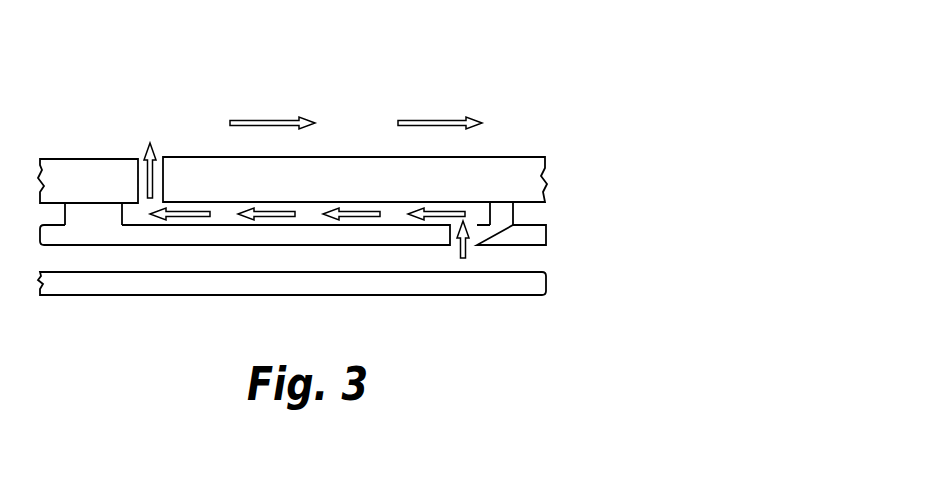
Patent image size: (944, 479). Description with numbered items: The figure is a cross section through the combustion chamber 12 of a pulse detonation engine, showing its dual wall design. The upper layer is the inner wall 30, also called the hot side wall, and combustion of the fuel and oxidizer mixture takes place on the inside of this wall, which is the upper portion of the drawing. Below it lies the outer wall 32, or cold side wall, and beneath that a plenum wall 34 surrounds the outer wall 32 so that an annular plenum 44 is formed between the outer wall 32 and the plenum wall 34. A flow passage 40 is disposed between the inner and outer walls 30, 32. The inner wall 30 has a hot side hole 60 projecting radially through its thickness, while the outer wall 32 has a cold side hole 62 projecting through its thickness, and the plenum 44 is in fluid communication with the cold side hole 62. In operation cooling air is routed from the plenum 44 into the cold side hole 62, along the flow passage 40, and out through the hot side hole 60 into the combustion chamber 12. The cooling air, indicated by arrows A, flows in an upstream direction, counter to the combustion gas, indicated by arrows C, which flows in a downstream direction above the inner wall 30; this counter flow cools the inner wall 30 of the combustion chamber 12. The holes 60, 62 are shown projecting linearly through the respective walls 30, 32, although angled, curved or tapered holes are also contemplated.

The combustion chamber 12 is at (546, 109).
The inner wall 30 is at (338, 176).
The outer wall 32 is at (203, 232).
The plenum wall 34 is at (262, 285).
The flow passage 40 is at (313, 217).
The annular plenum 44 is at (112, 267).
The hot side hole 60 is at (143, 160).
The cold side hole 62 is at (457, 244).
The combustion gas flow arrow C is at (263, 117).
The cooling air flow arrow A is at (182, 227).